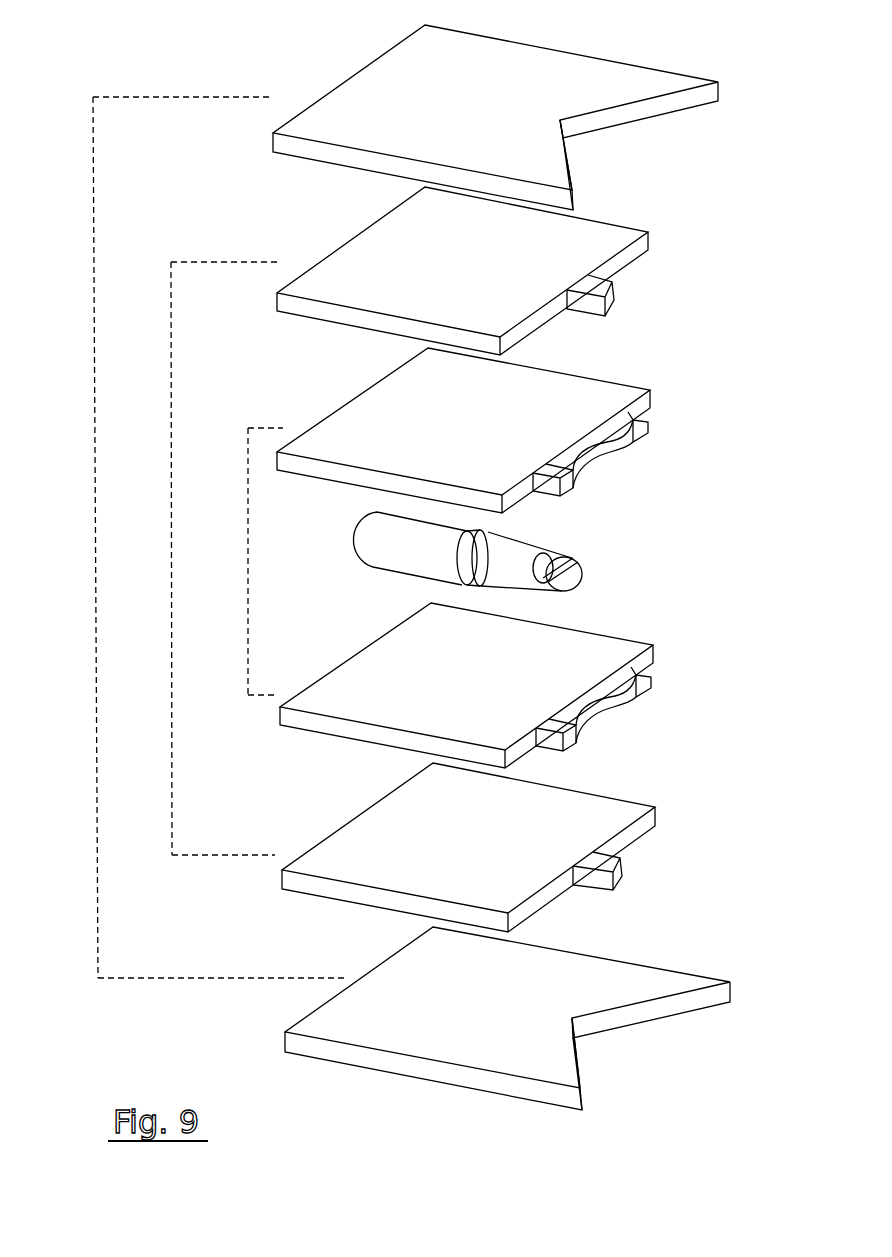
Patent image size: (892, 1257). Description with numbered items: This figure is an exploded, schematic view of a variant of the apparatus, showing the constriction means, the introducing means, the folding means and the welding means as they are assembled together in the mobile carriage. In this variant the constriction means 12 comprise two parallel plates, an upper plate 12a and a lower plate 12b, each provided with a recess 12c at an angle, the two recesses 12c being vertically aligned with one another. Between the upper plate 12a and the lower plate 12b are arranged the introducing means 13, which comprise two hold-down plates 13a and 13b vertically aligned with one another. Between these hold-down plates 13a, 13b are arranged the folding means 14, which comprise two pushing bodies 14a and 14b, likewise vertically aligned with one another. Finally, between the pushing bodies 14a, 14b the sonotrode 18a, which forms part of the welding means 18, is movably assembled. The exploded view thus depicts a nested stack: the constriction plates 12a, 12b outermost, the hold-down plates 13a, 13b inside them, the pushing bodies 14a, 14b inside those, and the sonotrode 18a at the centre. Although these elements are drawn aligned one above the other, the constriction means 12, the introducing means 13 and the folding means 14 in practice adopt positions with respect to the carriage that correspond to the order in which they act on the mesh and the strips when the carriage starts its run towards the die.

The constriction means 12 is at (95, 490).
The upper plate 12a is at (675, 82).
The lower plate 12b is at (685, 982).
The recess 12c is at (613, 120).
The introducing means 13 is at (170, 502).
The hold-down plate 13a is at (617, 297).
The hold-down plate 13b is at (625, 867).
The folding means 14 is at (248, 562).
The pushing body 14a is at (622, 442).
The pushing body 14b is at (612, 700).
The welding means 18 is at (475, 569).
The sonotrode 18a is at (535, 553).